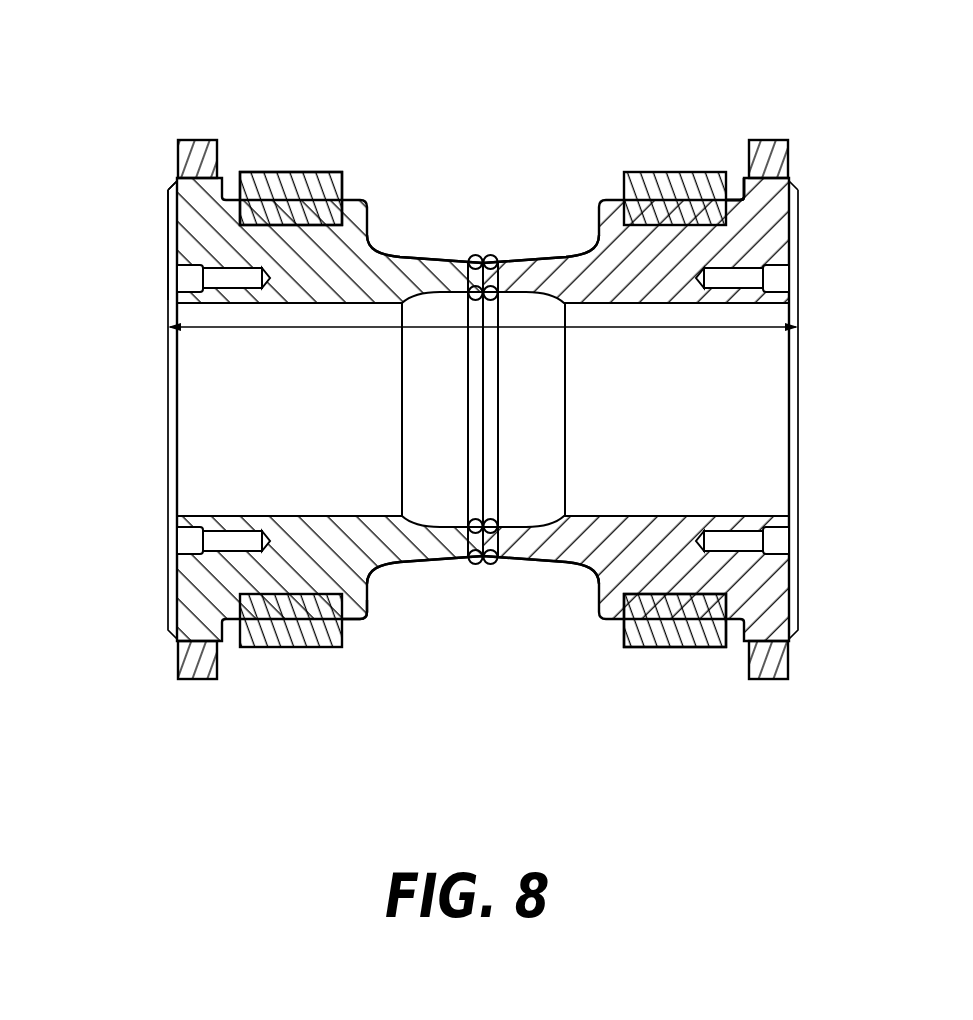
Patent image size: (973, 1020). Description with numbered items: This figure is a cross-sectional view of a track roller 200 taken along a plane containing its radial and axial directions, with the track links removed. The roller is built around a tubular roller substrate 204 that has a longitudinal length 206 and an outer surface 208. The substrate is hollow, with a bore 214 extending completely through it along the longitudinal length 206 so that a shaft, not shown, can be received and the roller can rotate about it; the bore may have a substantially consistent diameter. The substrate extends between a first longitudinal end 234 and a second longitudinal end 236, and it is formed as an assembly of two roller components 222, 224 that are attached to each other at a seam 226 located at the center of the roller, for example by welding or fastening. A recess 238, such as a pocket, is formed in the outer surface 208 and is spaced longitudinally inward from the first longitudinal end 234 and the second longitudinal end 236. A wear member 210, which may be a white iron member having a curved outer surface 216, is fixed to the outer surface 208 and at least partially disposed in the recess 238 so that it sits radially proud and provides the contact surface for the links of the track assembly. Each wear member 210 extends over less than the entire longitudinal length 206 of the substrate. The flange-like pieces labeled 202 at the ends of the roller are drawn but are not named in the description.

The track roller 200 is at (845, 75).
The flange ring 202 is at (193, 147).
The tubular roller substrate 204 is at (600, 245).
The longitudinal length 206 is at (223, 328).
The outer surface 208 is at (735, 200).
The wear member 210 is at (322, 164).
The bore 214 is at (283, 398).
The curved outer surface 216 is at (253, 172).
The roller component 222 is at (165, 611).
The roller component 224 is at (803, 457).
The seam 226 is at (487, 418).
The first longitudinal end 234 is at (167, 230).
The second longitudinal end 236 is at (802, 275).
The recess 238 is at (727, 215).